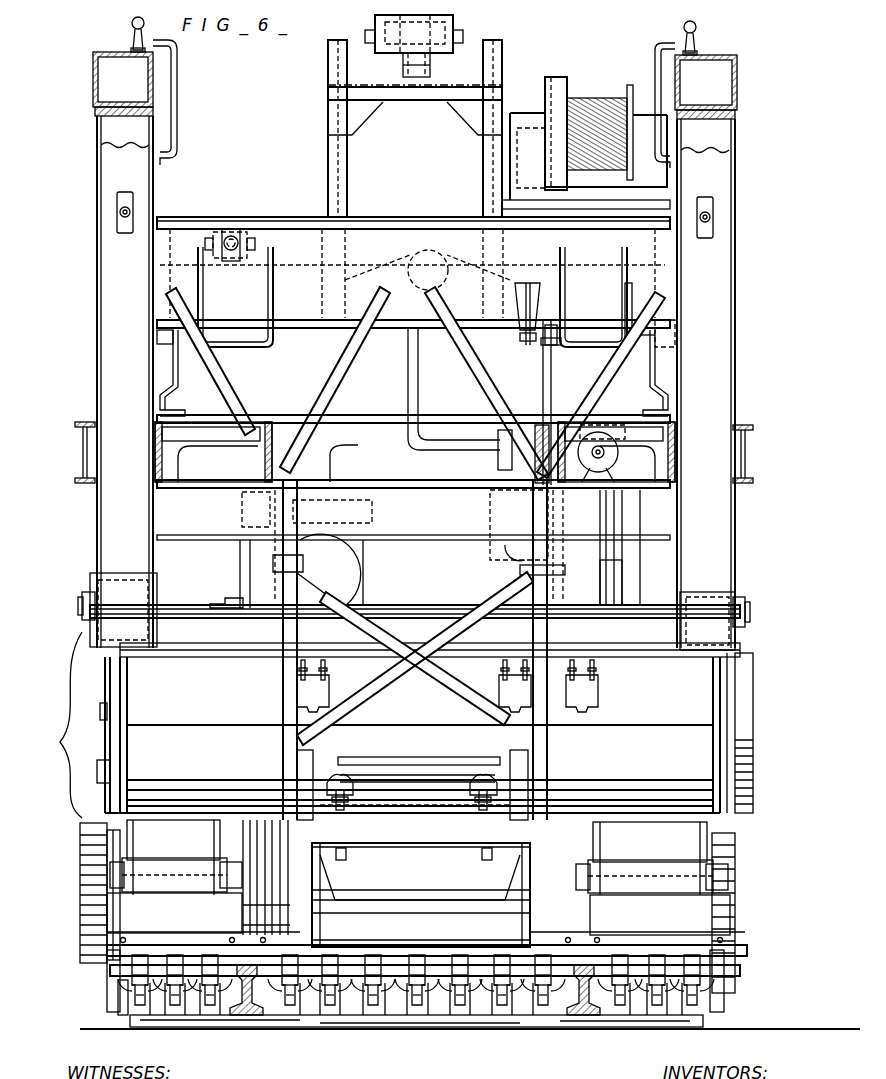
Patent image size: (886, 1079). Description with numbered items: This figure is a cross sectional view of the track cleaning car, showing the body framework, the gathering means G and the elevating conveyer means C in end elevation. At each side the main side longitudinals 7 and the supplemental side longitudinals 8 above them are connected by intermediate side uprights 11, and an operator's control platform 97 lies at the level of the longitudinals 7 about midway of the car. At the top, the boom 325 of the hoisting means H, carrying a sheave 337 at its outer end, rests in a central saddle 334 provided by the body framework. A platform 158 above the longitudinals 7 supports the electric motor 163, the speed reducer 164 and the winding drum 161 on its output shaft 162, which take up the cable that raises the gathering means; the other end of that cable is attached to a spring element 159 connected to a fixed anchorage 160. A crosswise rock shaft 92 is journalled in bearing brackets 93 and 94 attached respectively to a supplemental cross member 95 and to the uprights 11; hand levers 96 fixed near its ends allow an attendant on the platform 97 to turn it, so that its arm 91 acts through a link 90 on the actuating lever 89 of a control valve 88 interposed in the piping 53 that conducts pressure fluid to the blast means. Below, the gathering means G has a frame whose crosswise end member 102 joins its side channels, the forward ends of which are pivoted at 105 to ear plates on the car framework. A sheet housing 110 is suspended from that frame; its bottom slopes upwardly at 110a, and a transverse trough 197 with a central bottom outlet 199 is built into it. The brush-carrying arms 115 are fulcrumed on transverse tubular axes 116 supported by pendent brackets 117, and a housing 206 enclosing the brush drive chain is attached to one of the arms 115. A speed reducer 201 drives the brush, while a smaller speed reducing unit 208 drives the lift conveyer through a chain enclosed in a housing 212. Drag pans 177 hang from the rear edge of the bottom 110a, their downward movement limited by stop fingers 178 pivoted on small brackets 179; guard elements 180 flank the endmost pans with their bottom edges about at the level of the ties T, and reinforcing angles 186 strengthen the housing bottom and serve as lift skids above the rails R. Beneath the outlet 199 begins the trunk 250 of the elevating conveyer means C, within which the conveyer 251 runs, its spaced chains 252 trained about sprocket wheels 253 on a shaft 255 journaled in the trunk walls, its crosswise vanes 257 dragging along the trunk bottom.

The supplemental side longitudinals 8 is at (113, 52).
The intermediate side uprights 11 is at (107, 300).
The hoisting means H is at (479, 14).
The boom 325 is at (385, 40).
The sheave 337 is at (430, 62).
The central saddle 334 is at (415, 88).
The speed reducer 164 is at (556, 84).
The winding drum 161 is at (627, 85).
The electric motor 163 is at (520, 122).
The output shaft 162 is at (545, 140).
The platform 158 is at (445, 212).
The spring element 159 is at (232, 230).
The fixed anchorage 160 is at (252, 232).
The supplemental cross member 95 is at (298, 272).
The rock shaft 92 is at (320, 328).
The bearing bracket 93 is at (158, 337).
The bearing bracket 94 is at (662, 335).
The hand levers 96 is at (170, 370).
The piping 53 is at (410, 373).
The link 90 is at (553, 385).
The arm 91 is at (545, 340).
The actuating lever 89 is at (540, 425).
The control valve 88 is at (604, 464).
The operator's control platform 97 is at (293, 416).
The main side longitudinals 7 is at (90, 453).
The speed reducer 201 is at (358, 570).
The speed reducing unit 208 is at (500, 555).
The housing 212 is at (597, 553).
The crosswise end member 102 is at (420, 625).
The pivot 105 is at (82, 607).
The sheet housing 110 is at (695, 695).
The transverse trough 197 is at (705, 765).
The gathering means G is at (59, 725).
The trunk 250 is at (316, 760).
The conveyer 251 is at (500, 770).
The crosswise vanes 257 is at (497, 780).
The chains 252 is at (470, 803).
The central bottom outlet 199 is at (398, 806).
The elevating conveyer means C is at (538, 947).
The shaft 255 is at (252, 900).
The sprocket wheels 253 is at (250, 926).
The pendent brackets 117 is at (218, 841).
The tubular axes 116 is at (175, 868).
The housing 206 is at (85, 880).
The carrier arms 115 is at (112, 921).
The housing bottom 110a is at (700, 910).
The small brackets 179 is at (215, 958).
The stop fingers 178 is at (210, 1005).
The drag pans 177 is at (482, 1010).
The track rail R is at (247, 1018).
The guard elements 180 is at (132, 1022).
The ties T is at (510, 1032).
The reinforcing angles 186 is at (110, 990).